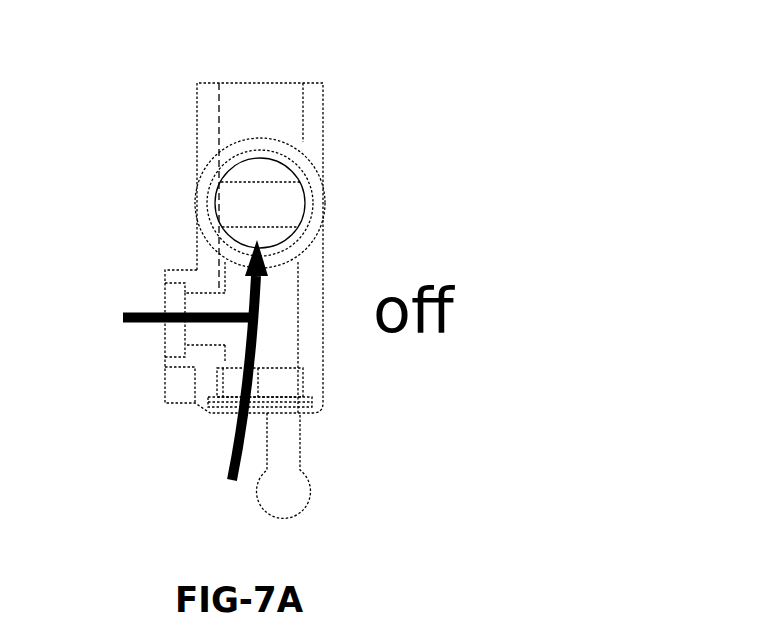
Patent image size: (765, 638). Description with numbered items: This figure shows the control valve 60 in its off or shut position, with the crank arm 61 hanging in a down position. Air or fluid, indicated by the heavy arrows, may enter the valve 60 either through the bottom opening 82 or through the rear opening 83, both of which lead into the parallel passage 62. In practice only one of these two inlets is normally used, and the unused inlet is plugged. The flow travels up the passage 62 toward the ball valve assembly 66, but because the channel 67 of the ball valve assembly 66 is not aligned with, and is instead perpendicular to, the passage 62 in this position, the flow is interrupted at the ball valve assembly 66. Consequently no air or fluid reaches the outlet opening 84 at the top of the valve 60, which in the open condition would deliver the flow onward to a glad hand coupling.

The valve 60 is at (403, 81).
The crank arm 61 is at (313, 478).
The parallel passage 62 is at (237, 83).
The ball valve assembly 66 is at (231, 167).
The channel 67 is at (277, 212).
The bottom opening 82 is at (233, 413).
The rear opening 83 is at (165, 302).
The opening 84 is at (288, 83).